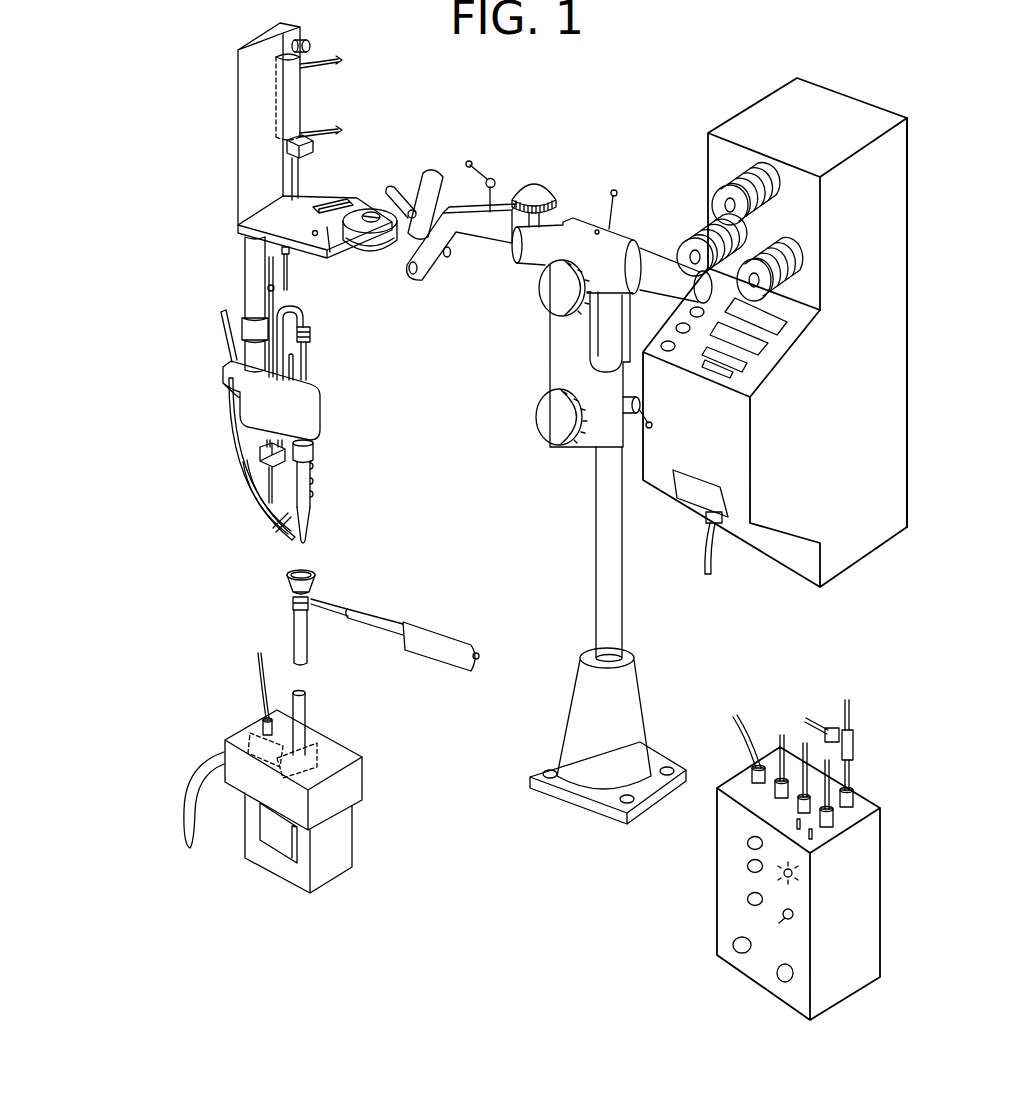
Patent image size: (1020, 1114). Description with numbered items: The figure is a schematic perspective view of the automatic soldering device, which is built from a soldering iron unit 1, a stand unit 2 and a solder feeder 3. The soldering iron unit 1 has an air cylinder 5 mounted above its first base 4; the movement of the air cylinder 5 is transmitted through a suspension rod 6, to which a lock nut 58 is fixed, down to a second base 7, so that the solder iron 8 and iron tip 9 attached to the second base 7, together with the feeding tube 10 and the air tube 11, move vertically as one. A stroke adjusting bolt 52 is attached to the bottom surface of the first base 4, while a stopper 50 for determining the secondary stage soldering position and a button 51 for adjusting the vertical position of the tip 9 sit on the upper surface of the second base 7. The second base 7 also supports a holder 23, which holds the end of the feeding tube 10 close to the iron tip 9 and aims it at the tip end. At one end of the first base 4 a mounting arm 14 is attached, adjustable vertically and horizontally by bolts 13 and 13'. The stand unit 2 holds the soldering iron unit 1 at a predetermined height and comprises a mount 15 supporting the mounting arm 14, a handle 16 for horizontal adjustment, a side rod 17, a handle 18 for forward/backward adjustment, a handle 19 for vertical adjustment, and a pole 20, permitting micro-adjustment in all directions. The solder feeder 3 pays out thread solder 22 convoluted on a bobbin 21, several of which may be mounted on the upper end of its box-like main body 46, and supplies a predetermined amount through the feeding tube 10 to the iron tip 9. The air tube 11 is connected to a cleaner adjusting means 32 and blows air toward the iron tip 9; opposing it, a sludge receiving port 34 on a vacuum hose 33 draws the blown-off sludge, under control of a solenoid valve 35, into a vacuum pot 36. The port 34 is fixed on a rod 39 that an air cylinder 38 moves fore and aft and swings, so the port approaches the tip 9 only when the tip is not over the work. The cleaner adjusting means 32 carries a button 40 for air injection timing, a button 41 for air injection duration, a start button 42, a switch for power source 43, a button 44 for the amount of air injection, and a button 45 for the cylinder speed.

The soldering iron unit 1 is at (216, 85).
The stand unit 2 is at (600, 180).
The solder feeder 3 is at (738, 97).
The first base 4 is at (303, 237).
The air cylinder 5 is at (303, 95).
The suspension rod 6 is at (247, 249).
The second base 7 is at (320, 412).
The solder iron 8 is at (313, 503).
The iron tip 9 is at (307, 538).
The feeding tube 10 is at (230, 461).
The air tube 11 is at (250, 483).
The bolt 13 is at (355, 249).
The bolt 13' is at (364, 185).
The mounting arm 14 is at (428, 178).
The mount 15 is at (394, 184).
The handle 16 is at (533, 183).
The side rod 17 is at (658, 268).
The handle 18 is at (546, 301).
The handle 19 is at (539, 429).
The pole 20 is at (617, 533).
The bobbin 21 is at (696, 240).
The thread solder 22 is at (750, 230).
The holder 23 is at (246, 440).
The cleaner adjusting means 32 is at (790, 1027).
The vacuum hose 33 is at (306, 703).
The sludge receiving port 34 is at (317, 575).
The solenoid valve 35 is at (346, 742).
The vacuum pot 36 is at (285, 855).
The air cylinder 38 is at (440, 637).
The rod 39 is at (337, 613).
The button 40 is at (733, 948).
The button 41 is at (783, 979).
The start button 42 is at (747, 900).
The switch for power source 43 is at (786, 915).
The button 44 is at (747, 866).
The button 45 is at (747, 842).
The main body 46 is at (852, 538).
The stopper 50 is at (268, 283).
The button 51 is at (311, 330).
The stroke adjusting bolt 52 is at (286, 258).
The lock nut 58 is at (242, 331).